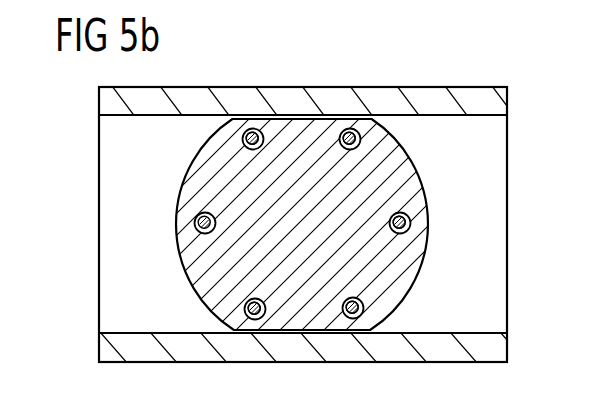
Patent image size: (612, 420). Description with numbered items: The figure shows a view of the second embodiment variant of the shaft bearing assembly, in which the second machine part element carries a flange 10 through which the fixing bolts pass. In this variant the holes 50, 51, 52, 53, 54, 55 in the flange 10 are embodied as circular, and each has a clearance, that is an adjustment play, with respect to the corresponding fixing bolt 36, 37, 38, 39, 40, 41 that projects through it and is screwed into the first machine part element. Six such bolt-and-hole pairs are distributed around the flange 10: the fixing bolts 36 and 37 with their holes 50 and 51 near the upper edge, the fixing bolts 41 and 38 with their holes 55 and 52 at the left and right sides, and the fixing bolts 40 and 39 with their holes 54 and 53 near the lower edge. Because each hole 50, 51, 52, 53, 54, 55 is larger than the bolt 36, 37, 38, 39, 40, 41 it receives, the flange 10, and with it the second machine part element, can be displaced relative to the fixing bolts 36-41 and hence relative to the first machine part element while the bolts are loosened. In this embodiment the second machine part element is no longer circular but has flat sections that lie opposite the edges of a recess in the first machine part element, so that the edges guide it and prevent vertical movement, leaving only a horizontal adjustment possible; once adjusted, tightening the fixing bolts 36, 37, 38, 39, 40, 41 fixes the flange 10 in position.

The flange 10 is at (167, 269).
The fixing bolt 36 is at (248, 129).
The fixing bolt 37 is at (346, 129).
The fixing bolt 38 is at (411, 217).
The fixing bolt 39 is at (352, 319).
The fixing bolt 40 is at (251, 320).
The fixing bolt 41 is at (179, 213).
The hole 50 is at (259, 129).
The hole 51 is at (356, 129).
The hole 52 is at (411, 231).
The hole 53 is at (360, 318).
The hole 54 is at (261, 319).
The hole 55 is at (205, 213).